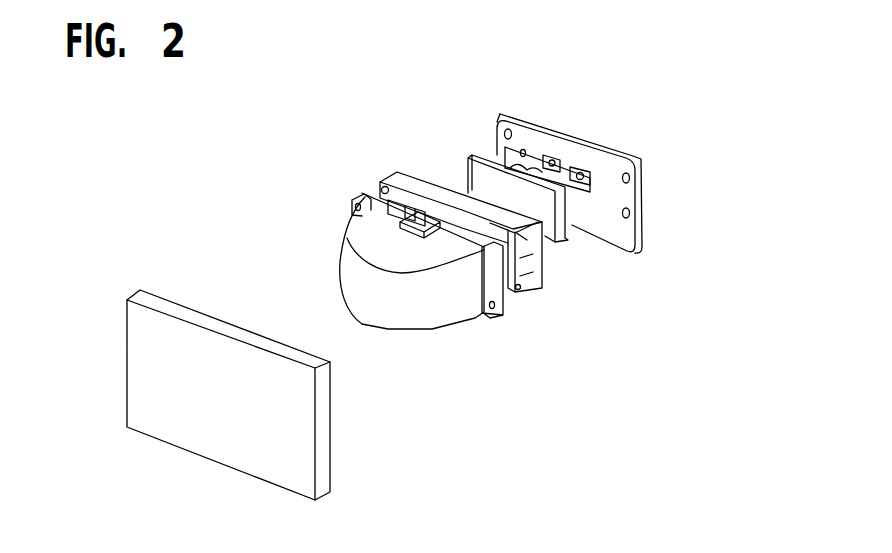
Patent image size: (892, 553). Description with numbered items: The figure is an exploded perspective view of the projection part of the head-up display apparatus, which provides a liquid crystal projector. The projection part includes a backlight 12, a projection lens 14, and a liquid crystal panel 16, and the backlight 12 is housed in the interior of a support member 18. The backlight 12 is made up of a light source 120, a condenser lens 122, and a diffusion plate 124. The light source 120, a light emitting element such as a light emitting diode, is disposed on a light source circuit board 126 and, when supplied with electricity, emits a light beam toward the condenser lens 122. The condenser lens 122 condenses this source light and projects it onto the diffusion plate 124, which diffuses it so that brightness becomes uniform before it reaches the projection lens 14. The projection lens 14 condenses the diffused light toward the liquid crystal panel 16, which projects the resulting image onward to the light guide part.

The backlight 12 is at (688, 291).
The projection lens 14 is at (417, 313).
The liquid crystal panel 16 is at (330, 433).
The support member 18 is at (402, 171).
The light source 120 is at (586, 187).
The condenser lens 122 is at (573, 215).
The diffusion plate 124 is at (548, 227).
The light source circuit board 126 is at (634, 199).